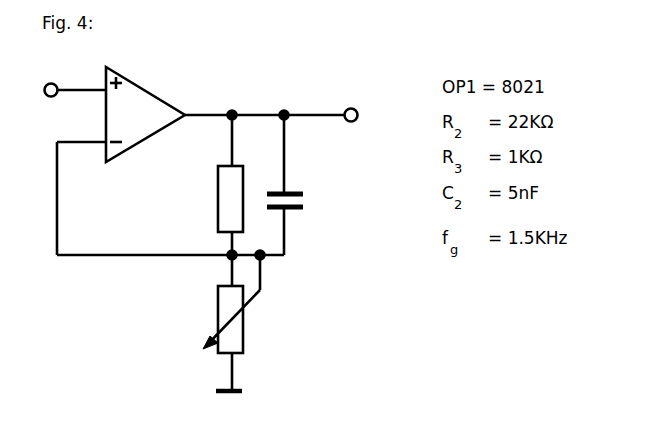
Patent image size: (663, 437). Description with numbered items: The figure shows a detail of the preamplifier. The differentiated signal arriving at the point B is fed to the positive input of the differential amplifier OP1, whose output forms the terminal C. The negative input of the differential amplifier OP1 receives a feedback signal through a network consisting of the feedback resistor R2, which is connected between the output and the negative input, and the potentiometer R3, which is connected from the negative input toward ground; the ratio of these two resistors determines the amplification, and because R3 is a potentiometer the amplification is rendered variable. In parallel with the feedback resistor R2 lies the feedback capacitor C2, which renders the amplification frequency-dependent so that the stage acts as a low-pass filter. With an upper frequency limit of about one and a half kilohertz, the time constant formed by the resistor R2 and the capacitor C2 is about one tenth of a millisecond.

The differential amplifier OP1 is at (145, 114).
The feedback resistor R2 is at (215, 185).
The potentiometer R3 is at (236, 323).
The feedback capacitor C2 is at (298, 185).
The output of the differentiating stage B is at (75, 80).
The output of the preamplifier C is at (351, 103).